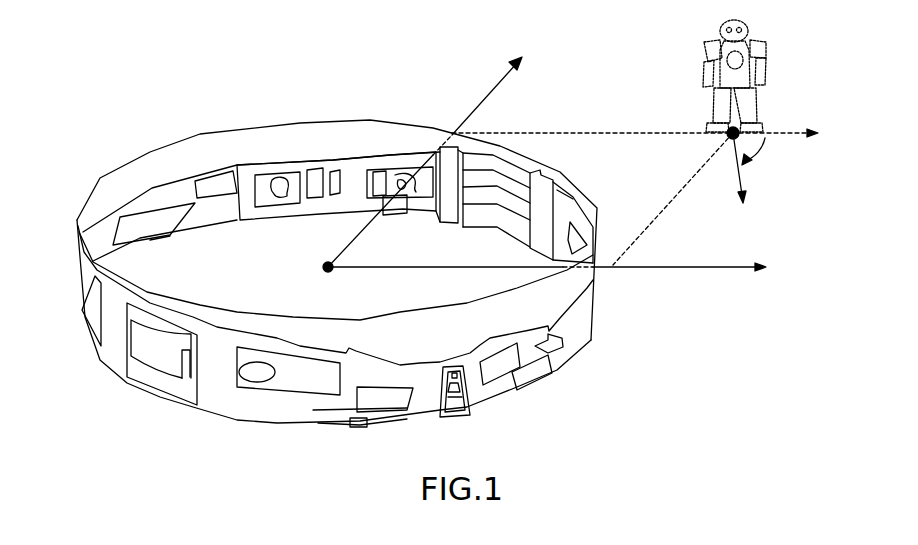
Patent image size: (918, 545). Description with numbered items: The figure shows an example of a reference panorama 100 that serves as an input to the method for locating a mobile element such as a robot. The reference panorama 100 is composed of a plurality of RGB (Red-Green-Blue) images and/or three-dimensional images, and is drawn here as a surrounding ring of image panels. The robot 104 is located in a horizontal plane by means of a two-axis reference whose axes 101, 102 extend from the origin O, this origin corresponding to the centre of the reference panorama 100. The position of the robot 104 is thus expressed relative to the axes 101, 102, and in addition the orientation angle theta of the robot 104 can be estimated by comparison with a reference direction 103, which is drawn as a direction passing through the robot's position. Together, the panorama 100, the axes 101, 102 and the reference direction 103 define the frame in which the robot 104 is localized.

The reference panorama 100 is at (105, 156).
The axis of two-axis reference 101 is at (707, 268).
The axis of two-axis reference 102 is at (466, 113).
The reference direction 103 is at (782, 133).
The robot 104 is at (728, 135).